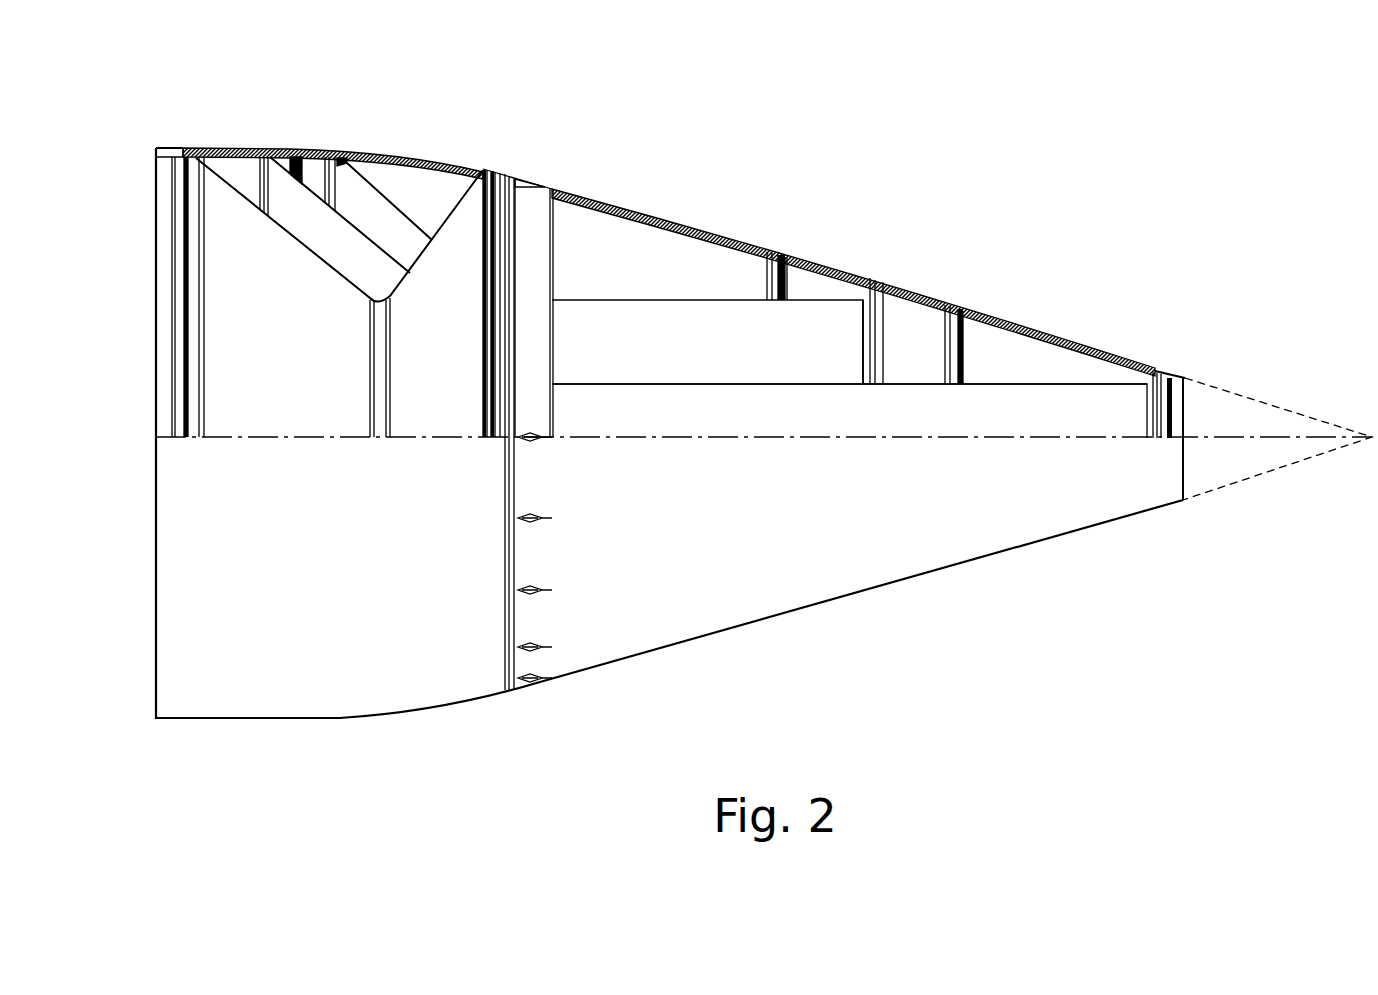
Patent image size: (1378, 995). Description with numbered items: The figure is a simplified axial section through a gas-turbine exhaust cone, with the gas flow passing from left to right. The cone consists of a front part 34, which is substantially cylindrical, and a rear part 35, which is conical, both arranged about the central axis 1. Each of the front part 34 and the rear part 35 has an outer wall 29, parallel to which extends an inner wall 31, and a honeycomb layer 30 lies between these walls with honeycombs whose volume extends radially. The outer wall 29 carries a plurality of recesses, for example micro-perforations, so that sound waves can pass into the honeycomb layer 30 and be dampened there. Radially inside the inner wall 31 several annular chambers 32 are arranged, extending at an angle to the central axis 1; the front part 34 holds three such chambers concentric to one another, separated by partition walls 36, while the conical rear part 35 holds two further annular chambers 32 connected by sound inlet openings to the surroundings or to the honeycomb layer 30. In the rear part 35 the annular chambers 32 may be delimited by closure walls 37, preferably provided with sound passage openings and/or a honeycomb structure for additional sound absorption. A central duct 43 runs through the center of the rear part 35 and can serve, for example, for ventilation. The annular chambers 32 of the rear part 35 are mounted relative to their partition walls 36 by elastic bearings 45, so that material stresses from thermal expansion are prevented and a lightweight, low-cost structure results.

The central axis 1 is at (1243, 433).
The outer wall 29 is at (693, 225).
The honeycomb layer 30 is at (415, 190).
The inner wall 31 is at (572, 215).
The annular chambers 32 is at (358, 205).
The front part 34 is at (328, 132).
The rear part 35 is at (853, 222).
The partition walls 36 is at (458, 205).
The closure walls 37 is at (778, 262).
The central duct 43 is at (1055, 417).
The elastic bearings 45 is at (873, 297).